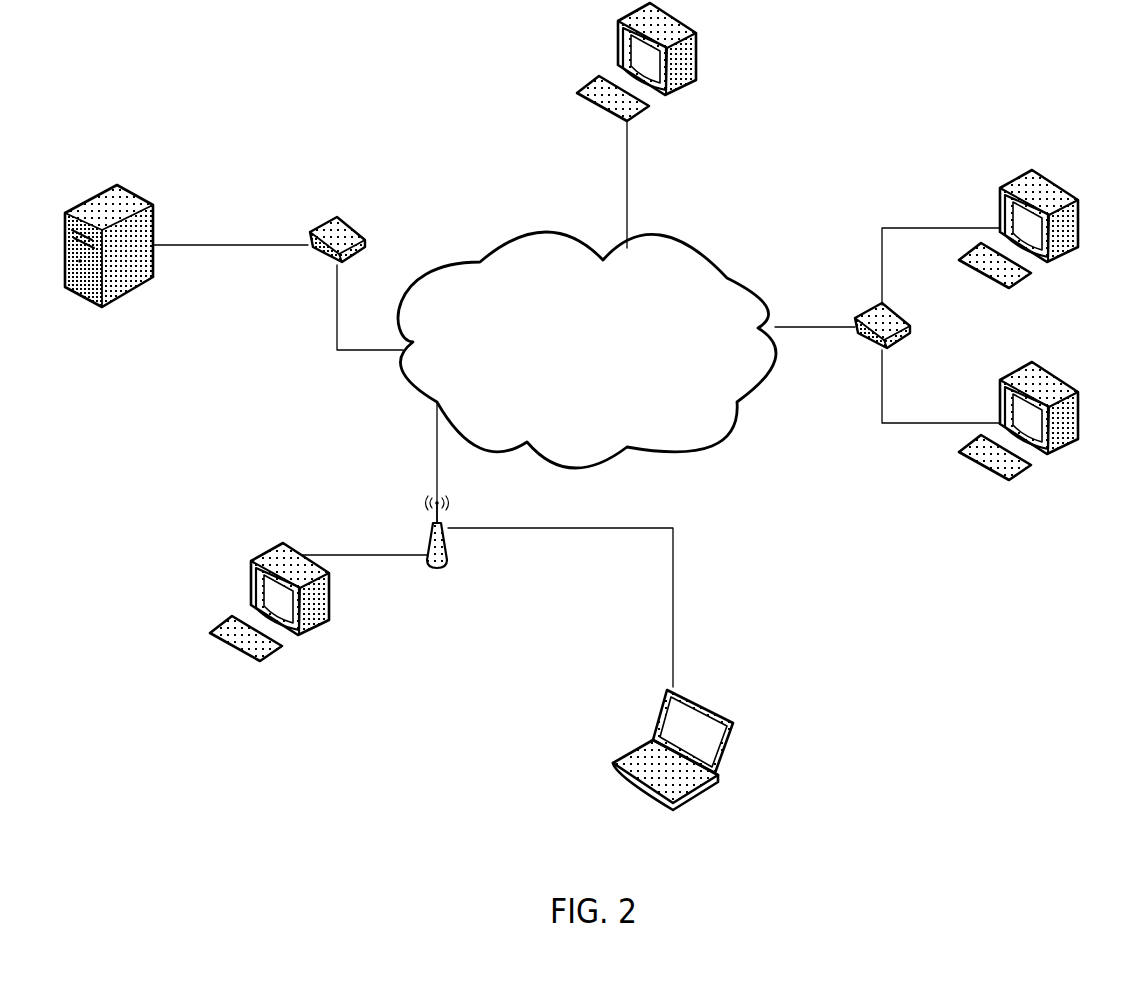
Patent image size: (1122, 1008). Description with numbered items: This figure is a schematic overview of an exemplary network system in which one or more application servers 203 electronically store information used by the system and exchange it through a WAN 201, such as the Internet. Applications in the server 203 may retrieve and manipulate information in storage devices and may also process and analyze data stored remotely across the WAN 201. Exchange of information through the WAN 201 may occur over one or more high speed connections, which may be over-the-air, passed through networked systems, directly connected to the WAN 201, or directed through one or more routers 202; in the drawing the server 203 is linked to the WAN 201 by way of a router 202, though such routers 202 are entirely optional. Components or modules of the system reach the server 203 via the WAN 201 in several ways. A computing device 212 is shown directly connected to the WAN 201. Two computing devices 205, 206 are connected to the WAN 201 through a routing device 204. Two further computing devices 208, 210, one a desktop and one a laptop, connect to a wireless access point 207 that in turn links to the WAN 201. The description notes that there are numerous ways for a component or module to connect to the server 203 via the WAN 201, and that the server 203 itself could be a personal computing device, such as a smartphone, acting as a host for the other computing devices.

The WAN 201 is at (587, 362).
The router 202 is at (312, 265).
The application server 203 is at (117, 248).
The routing device 204 is at (867, 345).
The computing device 205 is at (1026, 230).
The computing device 206 is at (1022, 427).
The wireless access point 207 is at (458, 535).
The computing device 208 is at (269, 607).
The computing device 210 is at (676, 757).
The computing device 212 is at (646, 63).